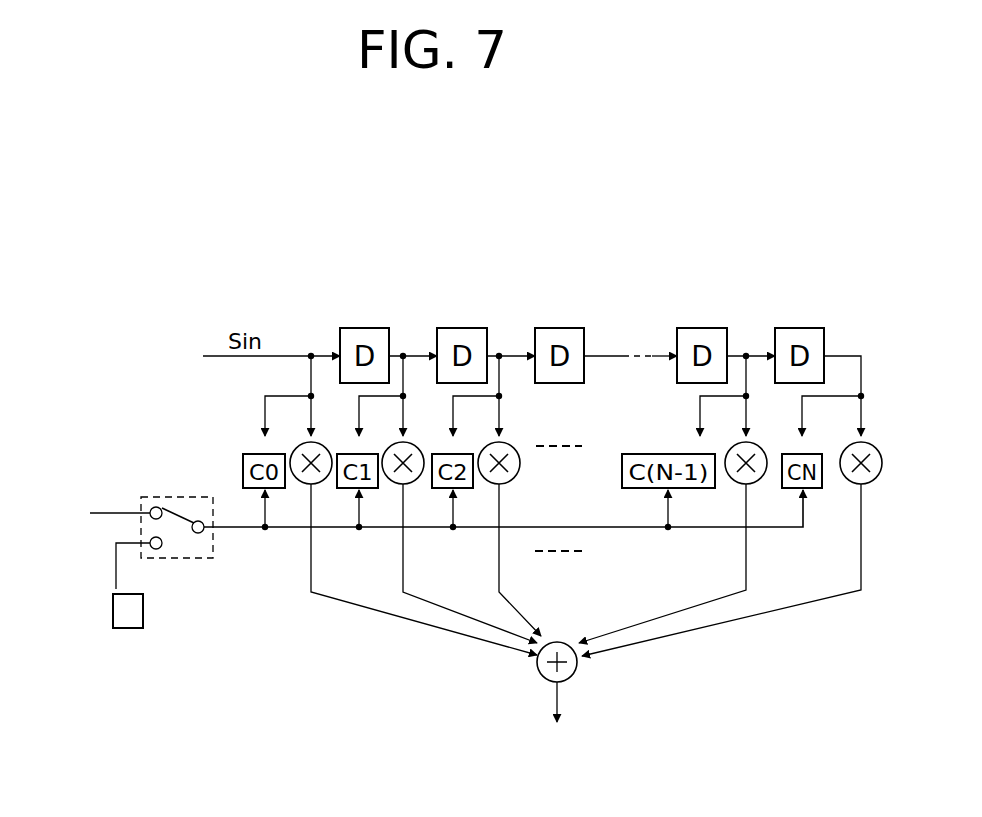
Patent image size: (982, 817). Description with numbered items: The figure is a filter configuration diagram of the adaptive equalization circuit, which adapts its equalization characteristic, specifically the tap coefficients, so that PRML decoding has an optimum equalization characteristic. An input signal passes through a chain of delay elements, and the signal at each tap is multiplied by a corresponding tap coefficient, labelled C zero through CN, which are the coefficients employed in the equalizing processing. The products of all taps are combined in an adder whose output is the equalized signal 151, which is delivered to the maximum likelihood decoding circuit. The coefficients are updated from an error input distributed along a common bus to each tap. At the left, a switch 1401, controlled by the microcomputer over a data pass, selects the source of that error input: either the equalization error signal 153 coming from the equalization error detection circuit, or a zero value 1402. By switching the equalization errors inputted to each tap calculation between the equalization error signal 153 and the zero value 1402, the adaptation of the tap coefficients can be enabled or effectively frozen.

The equalized signal 151 is at (556, 693).
The equalization error signal 153 is at (113, 512).
The switch 1401 is at (188, 560).
The zero value 1402 is at (112, 608).